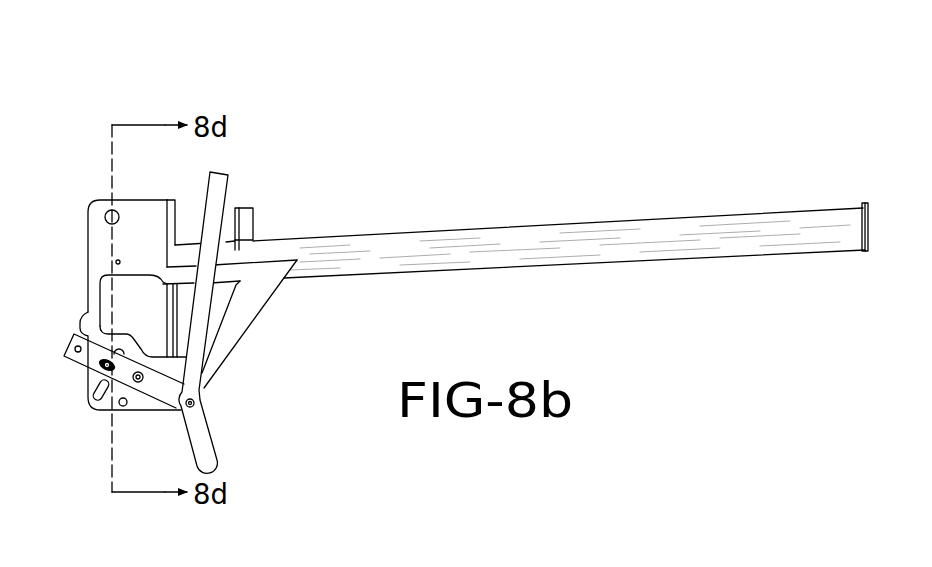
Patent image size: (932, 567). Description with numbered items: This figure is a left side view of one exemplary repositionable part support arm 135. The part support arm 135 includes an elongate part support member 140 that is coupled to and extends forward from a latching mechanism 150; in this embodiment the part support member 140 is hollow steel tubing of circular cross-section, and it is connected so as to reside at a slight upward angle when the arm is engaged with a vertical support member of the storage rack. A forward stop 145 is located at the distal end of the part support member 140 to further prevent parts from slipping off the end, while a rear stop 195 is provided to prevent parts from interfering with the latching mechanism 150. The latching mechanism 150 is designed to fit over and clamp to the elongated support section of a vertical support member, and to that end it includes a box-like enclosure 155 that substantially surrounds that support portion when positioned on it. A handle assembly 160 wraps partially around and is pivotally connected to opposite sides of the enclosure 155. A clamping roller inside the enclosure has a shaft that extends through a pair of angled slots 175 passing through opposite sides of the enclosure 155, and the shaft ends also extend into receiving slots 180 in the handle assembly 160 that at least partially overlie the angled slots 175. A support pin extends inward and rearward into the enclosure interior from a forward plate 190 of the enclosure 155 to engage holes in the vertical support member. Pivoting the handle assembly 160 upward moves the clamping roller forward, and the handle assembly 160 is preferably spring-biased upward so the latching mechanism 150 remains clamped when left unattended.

The repositionable part support arm 135 is at (522, 160).
The part support member 140 is at (594, 240).
The forward stop 145 is at (868, 222).
The latching mechanism 150 is at (82, 160).
The box-like enclosure 155 is at (67, 265).
The handle assembly 160 is at (230, 322).
The angled slots 175 is at (90, 397).
The receiving slots 180 is at (105, 361).
The forward plate 190 is at (170, 200).
The rear stop 195 is at (255, 222).